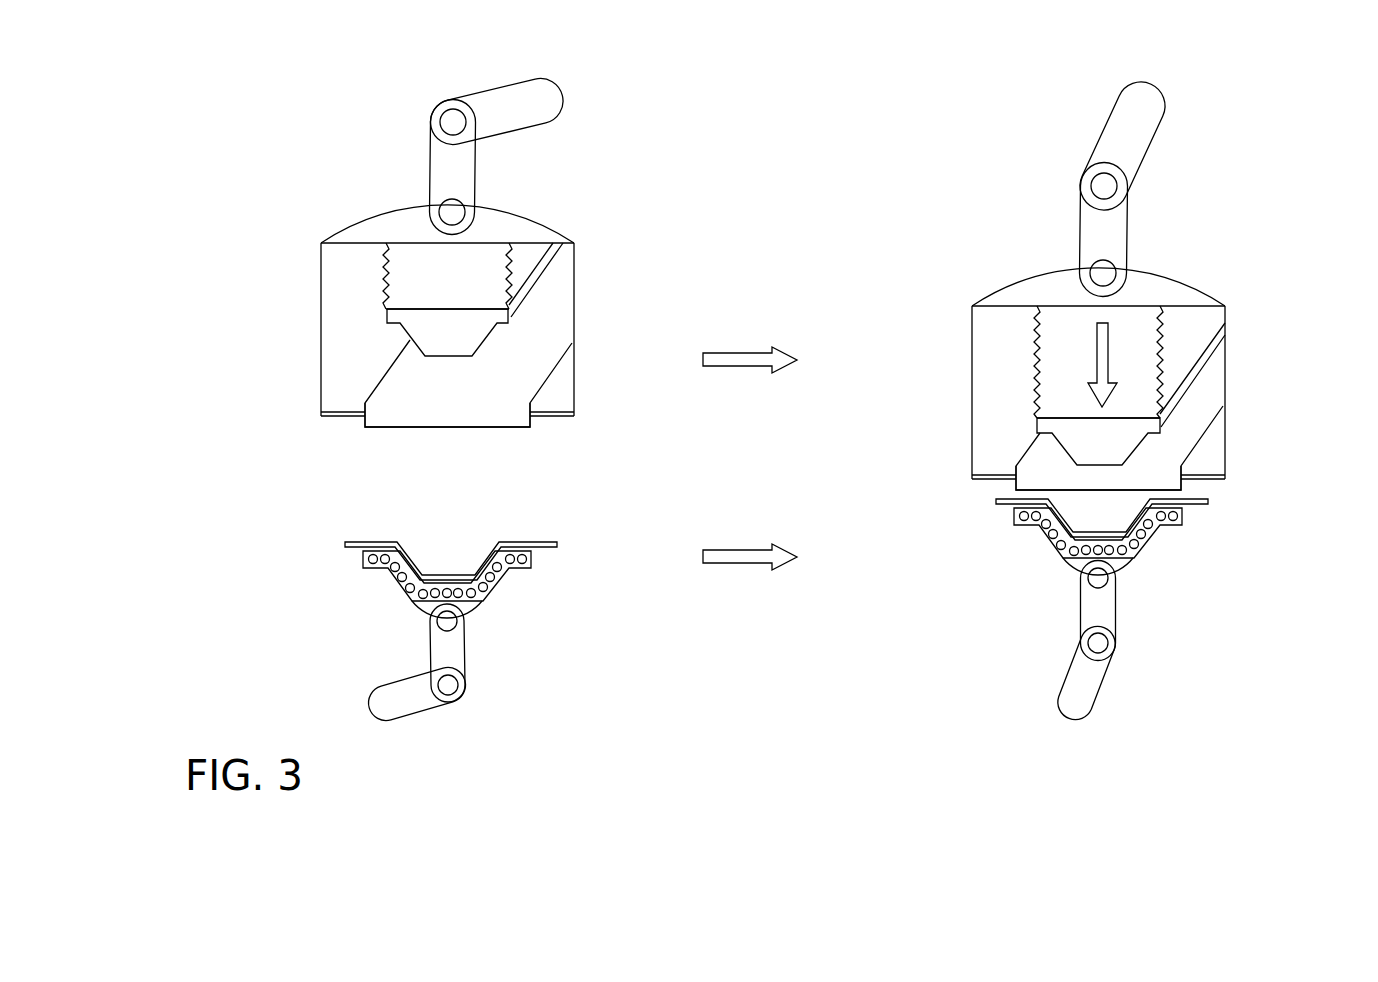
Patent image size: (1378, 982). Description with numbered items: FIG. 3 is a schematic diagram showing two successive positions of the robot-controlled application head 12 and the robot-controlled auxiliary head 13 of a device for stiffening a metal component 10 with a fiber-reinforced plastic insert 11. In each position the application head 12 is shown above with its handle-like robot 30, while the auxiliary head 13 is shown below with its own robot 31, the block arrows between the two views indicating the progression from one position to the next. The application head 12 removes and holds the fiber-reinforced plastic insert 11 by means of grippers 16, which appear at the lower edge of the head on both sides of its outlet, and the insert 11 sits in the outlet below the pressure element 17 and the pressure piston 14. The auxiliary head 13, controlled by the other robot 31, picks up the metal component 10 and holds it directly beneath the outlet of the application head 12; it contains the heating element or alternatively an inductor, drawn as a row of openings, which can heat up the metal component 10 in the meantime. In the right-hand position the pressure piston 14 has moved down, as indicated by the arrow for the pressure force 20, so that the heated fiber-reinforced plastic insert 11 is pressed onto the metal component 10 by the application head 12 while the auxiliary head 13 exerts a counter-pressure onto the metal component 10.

The metal component 10 is at (347, 543).
The fiber-reinforced plastic insert 11 is at (705, 446).
The application head 12 is at (565, 213).
The auxiliary head 13 is at (540, 630).
The pressure piston 14 is at (422, 334).
The gripper 16 is at (335, 415).
The pressure element 17 is at (407, 262).
The pressure force 20 is at (1103, 388).
The robot 30 is at (448, 172).
The robot 31 is at (378, 698).